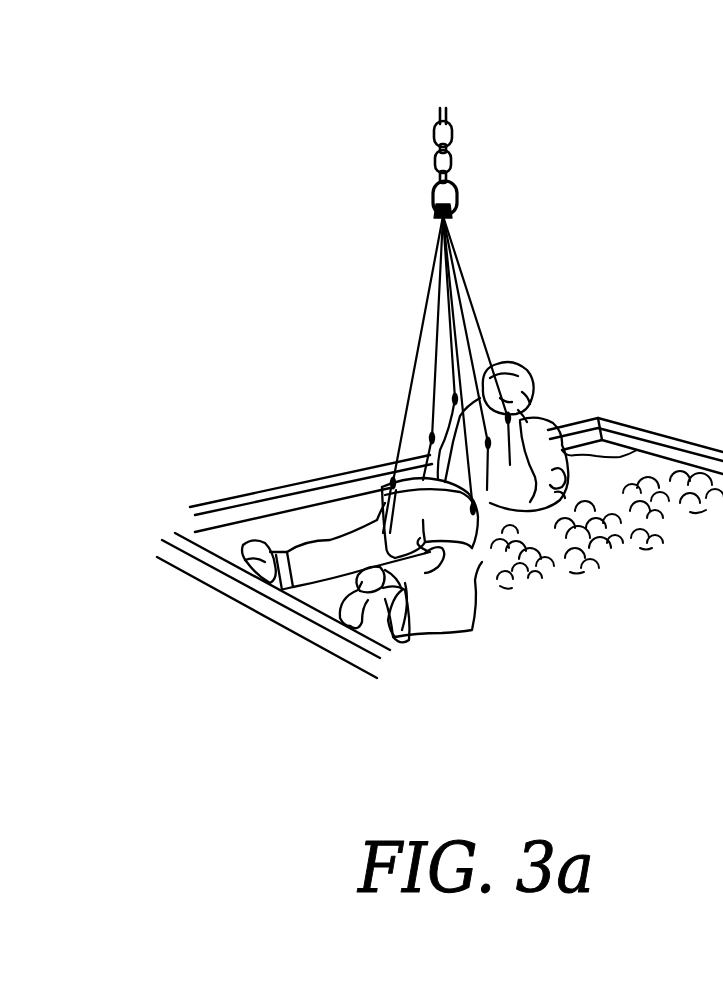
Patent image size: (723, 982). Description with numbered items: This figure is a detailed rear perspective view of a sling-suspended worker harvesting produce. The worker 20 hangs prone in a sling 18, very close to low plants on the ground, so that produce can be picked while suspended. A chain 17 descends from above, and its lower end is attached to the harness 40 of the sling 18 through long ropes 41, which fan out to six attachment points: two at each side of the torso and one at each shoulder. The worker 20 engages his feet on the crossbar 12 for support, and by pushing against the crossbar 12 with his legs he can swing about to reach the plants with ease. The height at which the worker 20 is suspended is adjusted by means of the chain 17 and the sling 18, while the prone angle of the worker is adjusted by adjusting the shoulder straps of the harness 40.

The crossbar 12 is at (315, 637).
The chain 17 is at (455, 158).
The sling 18 is at (465, 374).
The worker 20 is at (637, 452).
The harness 40 is at (515, 412).
The long ropes 41 is at (413, 311).